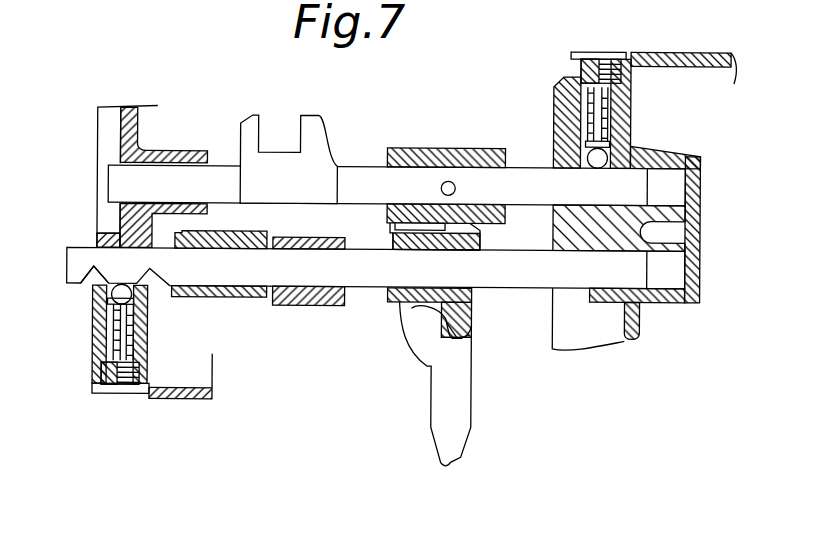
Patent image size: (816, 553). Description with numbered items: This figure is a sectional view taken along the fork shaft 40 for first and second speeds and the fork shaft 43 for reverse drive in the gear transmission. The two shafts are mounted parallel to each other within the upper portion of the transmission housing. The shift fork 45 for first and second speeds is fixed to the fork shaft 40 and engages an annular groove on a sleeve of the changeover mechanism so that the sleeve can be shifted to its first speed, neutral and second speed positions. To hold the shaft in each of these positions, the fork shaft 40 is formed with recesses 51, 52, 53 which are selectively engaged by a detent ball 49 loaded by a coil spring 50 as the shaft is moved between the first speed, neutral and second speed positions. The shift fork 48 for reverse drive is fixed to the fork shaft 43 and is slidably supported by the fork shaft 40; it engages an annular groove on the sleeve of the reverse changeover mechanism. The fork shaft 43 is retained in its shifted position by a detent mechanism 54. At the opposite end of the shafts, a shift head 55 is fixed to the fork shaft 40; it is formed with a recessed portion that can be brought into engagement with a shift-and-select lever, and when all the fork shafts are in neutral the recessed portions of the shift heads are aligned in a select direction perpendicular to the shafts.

The fork shaft 40 is at (520, 278).
The fork shaft 43 is at (357, 183).
The shift fork 45 is at (246, 294).
The shift fork 48 is at (457, 463).
The detent ball 49 is at (113, 284).
The coil spring 50 is at (119, 388).
The recess 51 is at (88, 290).
The recess 52 is at (140, 326).
The recess 53 is at (152, 273).
The detent mechanism 54 is at (602, 154).
The shift head 55 is at (322, 300).